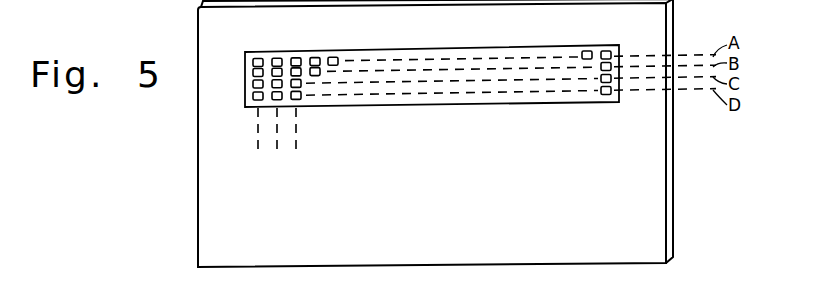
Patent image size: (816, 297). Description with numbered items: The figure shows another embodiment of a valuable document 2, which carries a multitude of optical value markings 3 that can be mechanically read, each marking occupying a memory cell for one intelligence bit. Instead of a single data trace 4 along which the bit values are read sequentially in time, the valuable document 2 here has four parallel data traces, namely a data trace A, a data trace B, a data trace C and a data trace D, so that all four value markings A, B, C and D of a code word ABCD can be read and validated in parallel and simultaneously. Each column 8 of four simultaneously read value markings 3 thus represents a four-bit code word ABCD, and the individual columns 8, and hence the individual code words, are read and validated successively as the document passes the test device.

The valuable document 2 is at (436, 76).
The optical value markings 3 is at (277, 58).
The data trace 4 is at (633, 92).
The column 8 is at (256, 125).